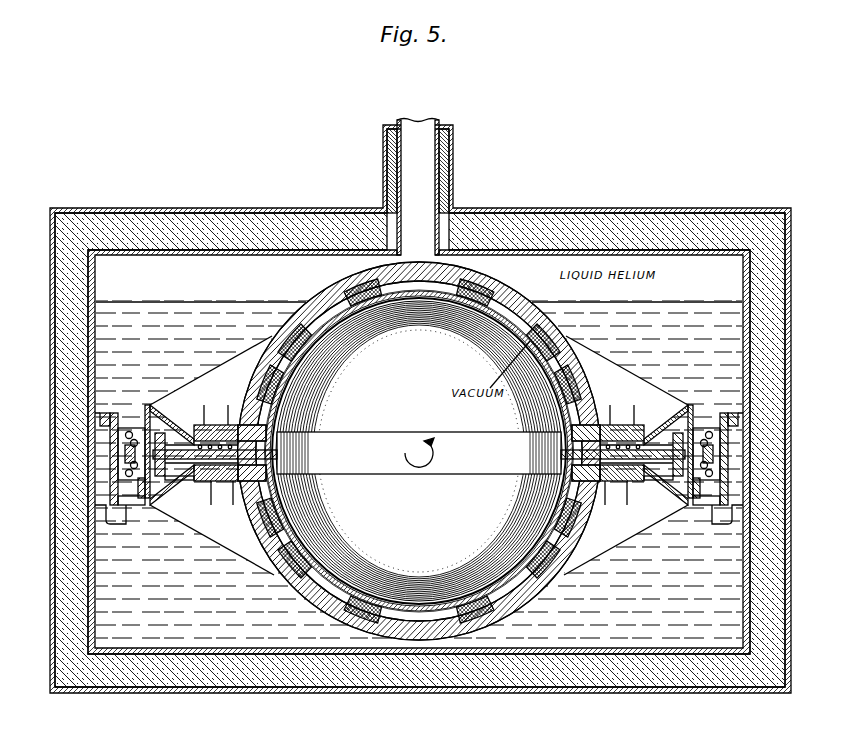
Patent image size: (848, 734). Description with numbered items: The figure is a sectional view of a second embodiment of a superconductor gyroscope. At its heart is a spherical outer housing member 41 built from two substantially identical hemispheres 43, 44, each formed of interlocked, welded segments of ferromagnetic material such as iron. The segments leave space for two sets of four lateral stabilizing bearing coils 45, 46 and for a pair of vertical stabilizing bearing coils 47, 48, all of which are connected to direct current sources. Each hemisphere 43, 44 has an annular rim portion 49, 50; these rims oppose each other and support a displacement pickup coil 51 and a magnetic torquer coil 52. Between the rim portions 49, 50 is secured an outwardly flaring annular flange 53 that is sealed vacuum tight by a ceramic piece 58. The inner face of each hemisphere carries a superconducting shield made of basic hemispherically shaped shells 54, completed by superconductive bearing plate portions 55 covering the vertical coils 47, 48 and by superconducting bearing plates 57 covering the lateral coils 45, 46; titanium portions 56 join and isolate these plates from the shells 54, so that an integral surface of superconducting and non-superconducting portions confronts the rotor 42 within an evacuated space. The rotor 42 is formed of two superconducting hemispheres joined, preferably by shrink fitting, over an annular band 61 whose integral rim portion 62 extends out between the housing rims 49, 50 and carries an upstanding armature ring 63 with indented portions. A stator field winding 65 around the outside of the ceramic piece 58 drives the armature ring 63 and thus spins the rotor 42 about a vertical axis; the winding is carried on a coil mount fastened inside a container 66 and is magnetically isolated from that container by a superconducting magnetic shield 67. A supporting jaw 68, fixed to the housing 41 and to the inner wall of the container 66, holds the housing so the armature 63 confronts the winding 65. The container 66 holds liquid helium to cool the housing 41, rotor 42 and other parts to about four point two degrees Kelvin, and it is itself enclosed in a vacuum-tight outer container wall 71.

The outer housing member 41 is at (504, 266).
The rotor 42 is at (407, 296).
The hemisphere 43 is at (430, 272).
The hemisphere 44 is at (405, 627).
The lateral stabilizing bearing coil 45 is at (280, 345).
The lateral stabilizing bearing coil 46 is at (566, 376).
The vertical stabilizing bearing coil 47 is at (338, 290).
The vertical stabilizing bearing coil 48 is at (348, 607).
The annular rim portion 49 is at (213, 417).
The annular rim portion 50 is at (216, 476).
The displacement pickup coil 51 is at (187, 433).
The magnetic torquer coil 52 is at (202, 476).
The outwardly flaring annular flange 53 is at (150, 500).
The hemispherically shaped shell 54 is at (388, 287).
The superconductive bearing plate portion 55 is at (335, 302).
The titanium portion 56 is at (318, 315).
The superconducting bearing plate 57 is at (298, 338).
The ceramic piece 58 is at (139, 400).
The annular band 61 is at (426, 426).
The rim portion 62 is at (156, 468).
The armature ring 63 is at (170, 474).
The stator field winding 65 is at (136, 472).
The container 66 is at (92, 272).
The magnetic shield of superconducting material 67 is at (104, 418).
The supporting jaw 68 is at (92, 493).
The outer container wall 71 is at (576, 200).